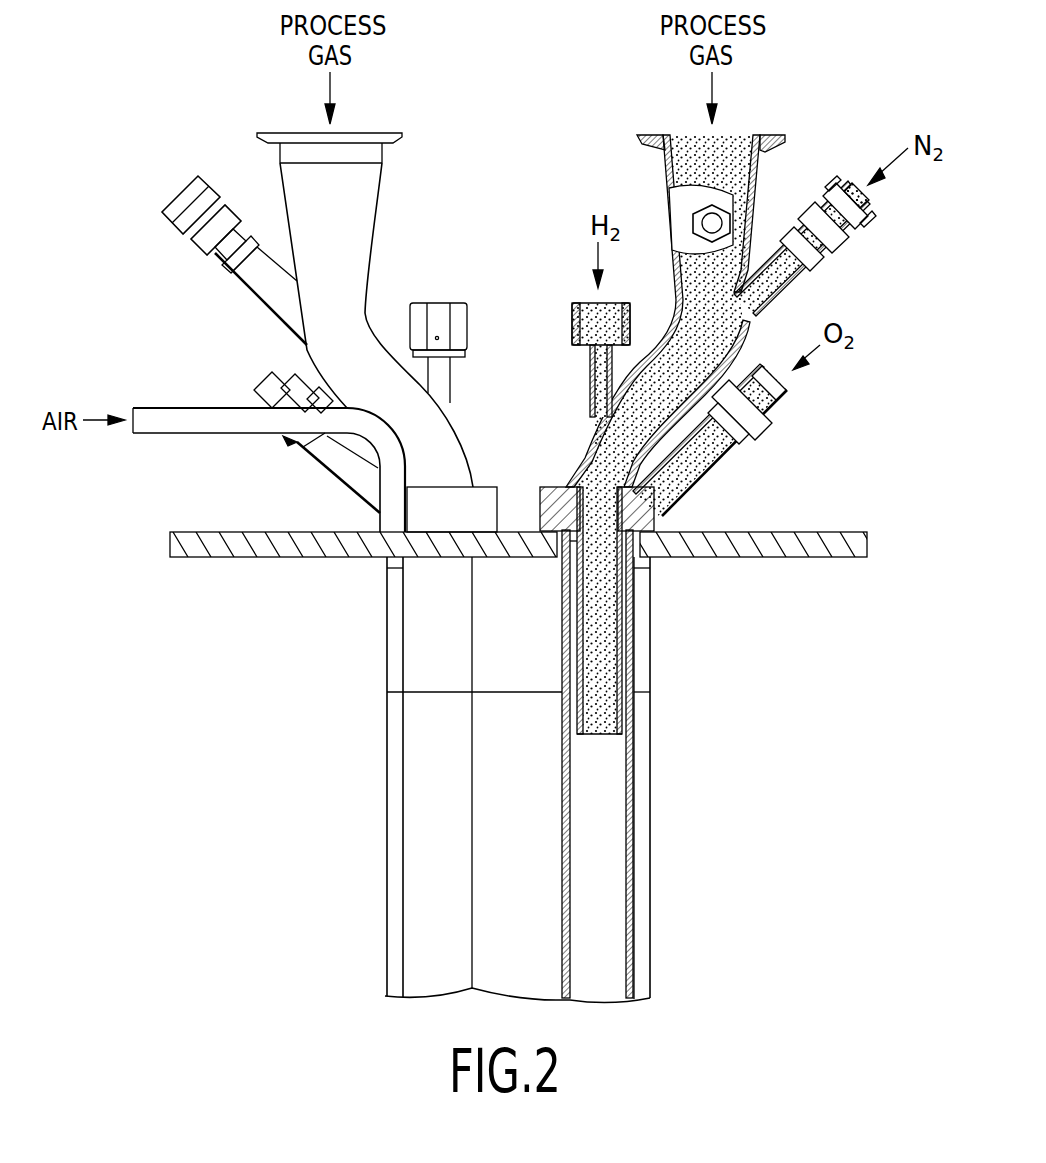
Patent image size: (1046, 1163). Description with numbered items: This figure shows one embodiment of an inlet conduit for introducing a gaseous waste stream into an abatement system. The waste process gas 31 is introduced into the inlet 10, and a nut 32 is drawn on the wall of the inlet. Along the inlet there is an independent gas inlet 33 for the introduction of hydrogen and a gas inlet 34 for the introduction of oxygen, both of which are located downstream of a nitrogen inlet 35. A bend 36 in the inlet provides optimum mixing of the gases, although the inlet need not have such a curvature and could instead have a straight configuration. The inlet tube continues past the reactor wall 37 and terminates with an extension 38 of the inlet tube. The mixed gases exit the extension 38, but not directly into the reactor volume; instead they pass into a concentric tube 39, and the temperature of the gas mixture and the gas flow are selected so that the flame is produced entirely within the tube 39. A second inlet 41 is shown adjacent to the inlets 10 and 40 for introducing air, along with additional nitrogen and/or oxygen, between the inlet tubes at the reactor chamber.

The inlet 10 is at (768, 167).
The waste process gas 31 is at (680, 135).
The nut 32 is at (693, 217).
The gas inlet 33 is at (575, 320).
The gas inlet 34 is at (762, 430).
The nitrogen inlet 35 is at (830, 247).
The bend 36 is at (717, 382).
The reactor wall 37 is at (782, 558).
The extension 38 is at (577, 630).
The concentric tube 39 is at (563, 795).
The inlet 40 is at (377, 222).
The second inlet 41 is at (183, 407).